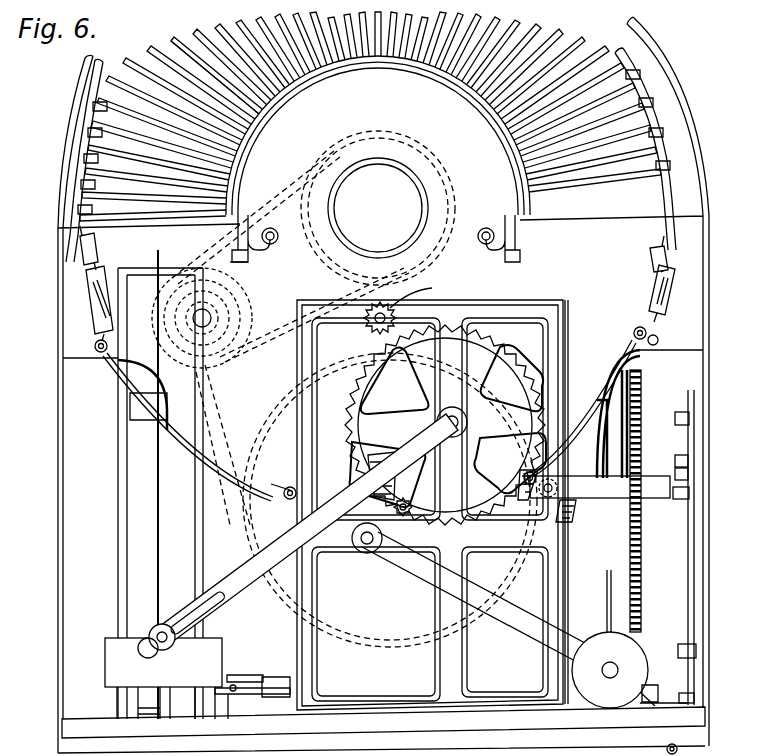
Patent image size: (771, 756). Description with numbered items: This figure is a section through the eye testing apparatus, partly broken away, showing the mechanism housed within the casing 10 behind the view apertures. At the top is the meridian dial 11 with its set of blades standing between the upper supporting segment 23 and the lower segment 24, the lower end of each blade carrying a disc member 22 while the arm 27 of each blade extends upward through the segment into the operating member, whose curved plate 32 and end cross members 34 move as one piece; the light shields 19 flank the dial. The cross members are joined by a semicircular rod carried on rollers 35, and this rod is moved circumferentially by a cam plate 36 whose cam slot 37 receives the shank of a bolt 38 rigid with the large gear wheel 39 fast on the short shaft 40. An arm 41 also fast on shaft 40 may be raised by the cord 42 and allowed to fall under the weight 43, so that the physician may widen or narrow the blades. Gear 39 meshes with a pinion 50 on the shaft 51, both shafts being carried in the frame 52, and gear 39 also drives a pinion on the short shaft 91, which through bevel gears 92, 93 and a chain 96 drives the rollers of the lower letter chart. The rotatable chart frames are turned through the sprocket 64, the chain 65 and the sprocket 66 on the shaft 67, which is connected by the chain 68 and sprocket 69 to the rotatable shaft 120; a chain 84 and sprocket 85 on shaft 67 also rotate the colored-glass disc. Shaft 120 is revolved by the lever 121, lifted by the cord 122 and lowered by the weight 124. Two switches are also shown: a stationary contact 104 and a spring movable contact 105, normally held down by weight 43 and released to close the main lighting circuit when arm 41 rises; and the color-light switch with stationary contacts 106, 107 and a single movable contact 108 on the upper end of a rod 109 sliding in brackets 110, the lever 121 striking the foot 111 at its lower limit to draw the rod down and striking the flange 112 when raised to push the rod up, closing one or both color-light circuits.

The casing 10 is at (58, 252).
The meridian dial 11 is at (205, 70).
The light shields 19 is at (478, 108).
The disc member 22 is at (400, 62).
The upper supporting segment 23 is at (84, 132).
The segment 24 is at (300, 88).
The arm 27 is at (88, 158).
The curved plate 32 is at (92, 107).
The cross members 34 is at (84, 268).
The rollers 35 is at (100, 352).
The plate 36 is at (385, 440).
The cam slot 37 is at (350, 440).
The bolt 38 is at (404, 518).
The gear wheel 39 is at (362, 357).
The shaft 40 is at (460, 418).
The arm 41 is at (272, 590).
The cord 42 is at (157, 544).
The weight 43 is at (112, 664).
The pinion 50 is at (393, 304).
The shaft 51 is at (434, 288).
The frame 52 is at (543, 300).
The sprocket 64 is at (378, 212).
The chain 65 is at (272, 222).
The sprocket 66 is at (314, 315).
The shaft 67 is at (212, 312).
The chain 68 is at (226, 416).
The sprocket 69 is at (374, 500).
The chain 84 is at (228, 266).
The sprocket 85 is at (249, 264).
The shaft 91 is at (568, 522).
The bevel gear 92 is at (548, 540).
The bevel gear 93 is at (570, 470).
The chain 96 is at (641, 545).
The stationary contact 104 is at (250, 666).
The movable contact 105 is at (250, 695).
The stationary contact 106 is at (278, 677).
The stationary contact 107 is at (680, 412).
The movable contact 108 is at (690, 462).
The rod 109 is at (695, 548).
The brackets 110 is at (690, 494).
The foot 111 is at (676, 720).
The flange 112 is at (690, 478).
The shaft 120 is at (362, 548).
The lever 121 is at (508, 585).
The cord 122 is at (612, 578).
The weight 124 is at (578, 666).